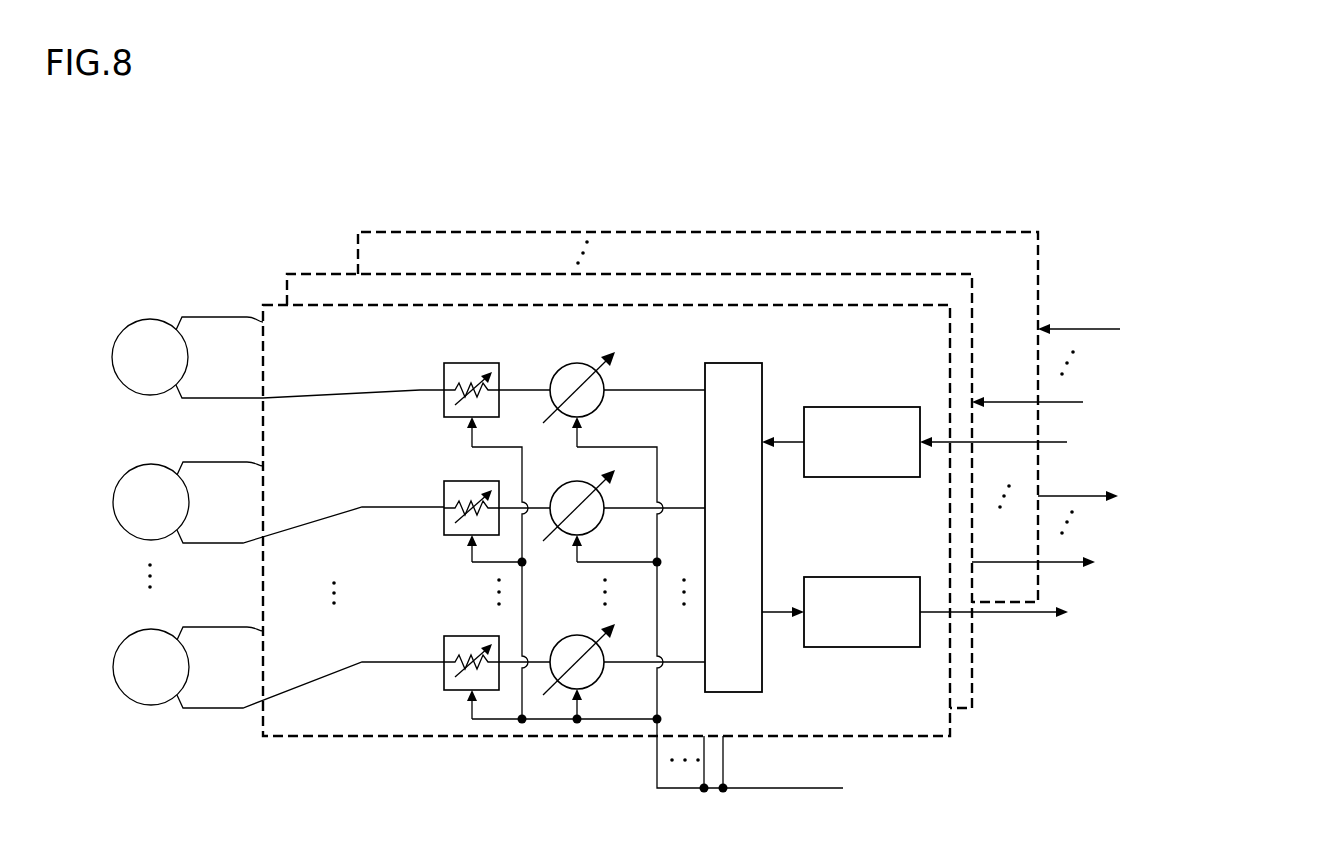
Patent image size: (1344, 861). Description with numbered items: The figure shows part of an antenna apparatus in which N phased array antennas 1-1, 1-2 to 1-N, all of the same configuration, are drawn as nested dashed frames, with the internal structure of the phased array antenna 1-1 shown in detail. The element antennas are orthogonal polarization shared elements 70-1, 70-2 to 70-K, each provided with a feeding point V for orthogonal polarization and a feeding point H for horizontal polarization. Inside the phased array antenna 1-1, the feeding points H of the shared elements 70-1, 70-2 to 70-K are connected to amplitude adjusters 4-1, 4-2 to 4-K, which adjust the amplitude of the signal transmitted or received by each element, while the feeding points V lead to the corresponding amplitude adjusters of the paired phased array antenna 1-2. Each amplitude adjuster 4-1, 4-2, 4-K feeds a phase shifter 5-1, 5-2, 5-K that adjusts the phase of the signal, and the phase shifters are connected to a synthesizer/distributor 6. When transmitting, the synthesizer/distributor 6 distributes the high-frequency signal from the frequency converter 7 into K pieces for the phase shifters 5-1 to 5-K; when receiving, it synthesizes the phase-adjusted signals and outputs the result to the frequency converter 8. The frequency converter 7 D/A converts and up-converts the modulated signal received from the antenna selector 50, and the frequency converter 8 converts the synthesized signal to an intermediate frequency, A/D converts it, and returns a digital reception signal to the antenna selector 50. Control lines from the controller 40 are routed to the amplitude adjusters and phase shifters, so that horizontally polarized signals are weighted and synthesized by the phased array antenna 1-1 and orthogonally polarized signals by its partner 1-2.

The phased array antenna 1-1 is at (272, 305).
The phased array antenna 1-2 is at (420, 275).
The phased array antenna 1-N is at (463, 232).
The orthogonal polarization shared element 70-1 is at (136, 322).
The orthogonal polarization shared element 70-2 is at (136, 466).
The orthogonal polarization shared element 70-K is at (124, 631).
The amplitude adjuster 4-1 is at (458, 363).
The amplitude adjuster 4-2 is at (464, 481).
The amplitude adjuster 4-K is at (462, 636).
The phase shifter 5-1 is at (569, 363).
The phase shifter 5-2 is at (560, 476).
The phase shifter 5-K is at (556, 641).
The synthesizer/distributor 6 is at (762, 372).
The frequency converter 7 is at (876, 407).
The frequency converter 8 is at (877, 577).
The controller 40 is at (938, 791).
The antenna selector 50 is at (1122, 474).